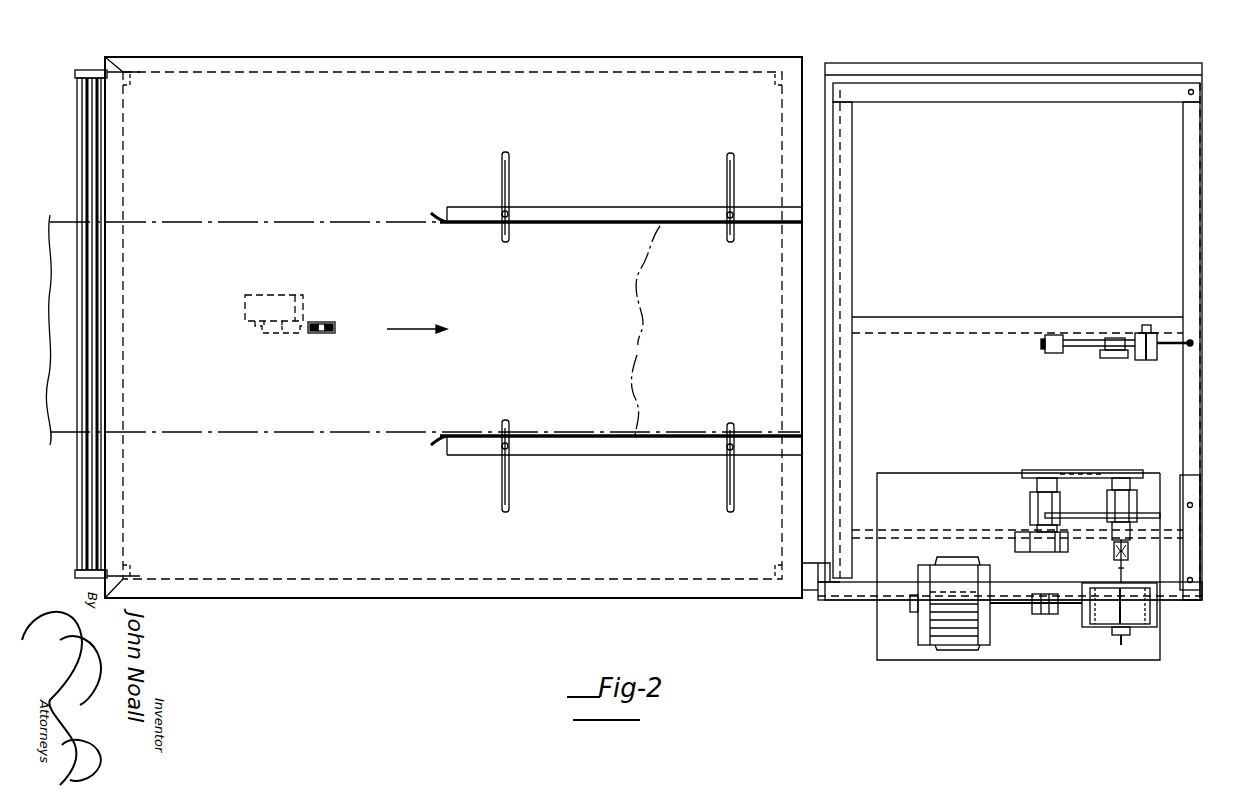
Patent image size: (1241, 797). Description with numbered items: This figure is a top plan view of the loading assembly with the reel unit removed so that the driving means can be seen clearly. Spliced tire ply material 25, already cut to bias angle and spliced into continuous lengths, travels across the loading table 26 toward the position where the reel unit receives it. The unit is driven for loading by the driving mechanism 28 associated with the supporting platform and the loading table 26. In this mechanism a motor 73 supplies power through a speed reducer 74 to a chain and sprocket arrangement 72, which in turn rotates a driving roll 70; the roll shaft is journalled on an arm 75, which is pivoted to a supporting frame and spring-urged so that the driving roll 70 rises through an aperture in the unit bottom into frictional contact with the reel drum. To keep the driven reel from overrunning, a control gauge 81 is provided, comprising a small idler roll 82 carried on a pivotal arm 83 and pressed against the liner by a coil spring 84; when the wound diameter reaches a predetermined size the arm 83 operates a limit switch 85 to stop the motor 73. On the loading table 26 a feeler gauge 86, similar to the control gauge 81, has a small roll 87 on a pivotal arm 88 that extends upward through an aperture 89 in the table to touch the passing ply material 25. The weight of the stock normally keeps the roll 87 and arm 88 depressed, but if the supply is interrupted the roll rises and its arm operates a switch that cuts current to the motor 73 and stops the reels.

The spliced tire ply material 25 is at (292, 218).
The loading table 26 is at (380, 55).
The driving mechanism 28 is at (1004, 663).
The driving roll 70 is at (1015, 540).
The chain and sprocket arrangement 72 is at (1083, 470).
The motor 73 is at (950, 650).
The speed reducer 74 is at (1098, 628).
The arm 75 is at (1090, 528).
The control gauge 81 is at (1140, 360).
The idler roll 82 is at (1044, 344).
The pivotal arm 83 is at (1080, 348).
The coil spring 84 is at (1193, 343).
The limit switch 85 is at (1110, 358).
The feeler gauge 86 is at (290, 295).
The roll 87 is at (322, 333).
The pivotal arm 88 is at (294, 335).
The aperture 89 is at (333, 325).